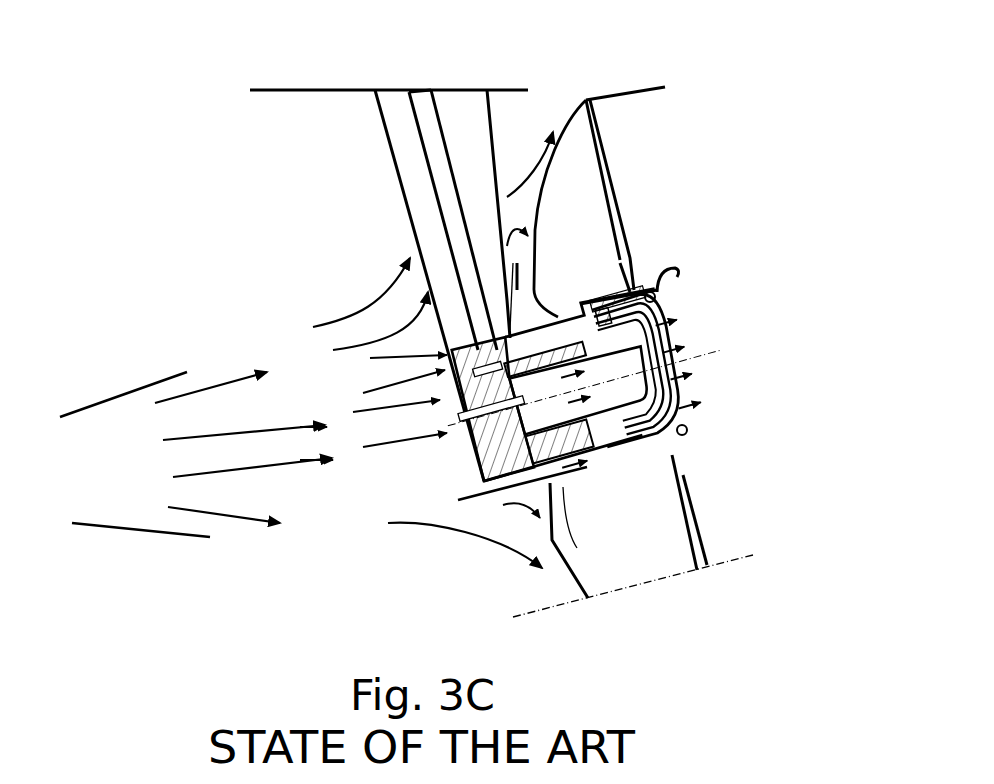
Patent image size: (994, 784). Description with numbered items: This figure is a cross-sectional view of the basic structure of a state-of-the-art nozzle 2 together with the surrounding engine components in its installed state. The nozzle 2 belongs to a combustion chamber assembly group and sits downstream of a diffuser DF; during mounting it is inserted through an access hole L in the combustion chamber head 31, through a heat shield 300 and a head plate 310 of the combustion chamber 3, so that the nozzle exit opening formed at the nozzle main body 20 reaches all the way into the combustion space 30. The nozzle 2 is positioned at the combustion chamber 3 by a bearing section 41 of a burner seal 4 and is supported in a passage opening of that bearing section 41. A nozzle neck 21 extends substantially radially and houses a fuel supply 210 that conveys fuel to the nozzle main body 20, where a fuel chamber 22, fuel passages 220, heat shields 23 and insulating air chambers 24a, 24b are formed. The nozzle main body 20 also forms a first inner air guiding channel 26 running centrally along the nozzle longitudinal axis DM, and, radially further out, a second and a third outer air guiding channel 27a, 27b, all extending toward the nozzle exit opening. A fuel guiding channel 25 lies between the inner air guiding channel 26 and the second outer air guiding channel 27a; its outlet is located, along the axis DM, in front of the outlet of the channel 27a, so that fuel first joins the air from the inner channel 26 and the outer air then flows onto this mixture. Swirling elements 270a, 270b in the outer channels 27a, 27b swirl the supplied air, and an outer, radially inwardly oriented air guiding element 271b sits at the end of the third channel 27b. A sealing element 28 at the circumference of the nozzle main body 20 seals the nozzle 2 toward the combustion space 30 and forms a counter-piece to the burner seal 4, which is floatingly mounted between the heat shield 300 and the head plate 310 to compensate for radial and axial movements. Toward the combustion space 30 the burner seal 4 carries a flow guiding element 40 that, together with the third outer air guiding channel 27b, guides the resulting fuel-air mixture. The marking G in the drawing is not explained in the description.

The nozzle 2 is at (470, 482).
The combustion chamber 3 is at (645, 80).
The burner seal 4 is at (668, 269).
The nozzle main body 20 is at (453, 383).
The nozzle neck 21 is at (400, 163).
The fuel chamber 22 is at (515, 440).
The heat shields 23 is at (470, 415).
The air chamber 24a is at (503, 268).
The air chamber 24b is at (590, 457).
The fuel guiding channel 25 is at (667, 390).
The inner air guiding channel 26 is at (480, 440).
The outer air guiding channel 27a is at (643, 453).
The outer air guiding channel 27b is at (688, 427).
The sealing element 28 is at (693, 435).
The combustion space 30 is at (728, 104).
The combustion chamber head 31 is at (563, 123).
The flow guiding element 40 is at (677, 273).
The bearing section 41 is at (672, 482).
The fuel supply 210 is at (448, 212).
The fuel passages 220 is at (578, 323).
The swirling element 270a is at (645, 283).
The swirling element 270b is at (682, 450).
The air guiding element 271b is at (657, 298).
The heat shield 300 is at (617, 196).
The head plate 310 is at (596, 164).
The ground/gap line G is at (315, 91).
The nozzle longitudinal axis DM is at (703, 355).
The access hole L is at (573, 540).
The diffuser DF is at (155, 538).